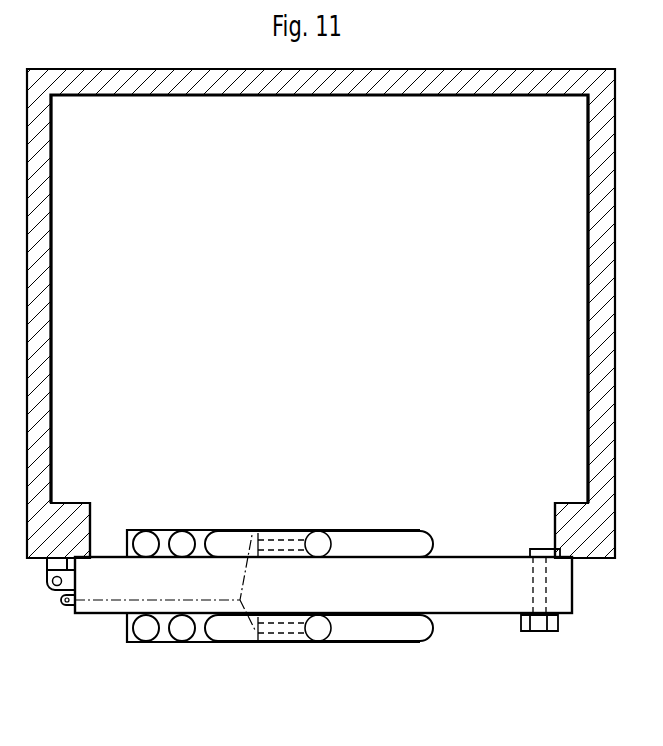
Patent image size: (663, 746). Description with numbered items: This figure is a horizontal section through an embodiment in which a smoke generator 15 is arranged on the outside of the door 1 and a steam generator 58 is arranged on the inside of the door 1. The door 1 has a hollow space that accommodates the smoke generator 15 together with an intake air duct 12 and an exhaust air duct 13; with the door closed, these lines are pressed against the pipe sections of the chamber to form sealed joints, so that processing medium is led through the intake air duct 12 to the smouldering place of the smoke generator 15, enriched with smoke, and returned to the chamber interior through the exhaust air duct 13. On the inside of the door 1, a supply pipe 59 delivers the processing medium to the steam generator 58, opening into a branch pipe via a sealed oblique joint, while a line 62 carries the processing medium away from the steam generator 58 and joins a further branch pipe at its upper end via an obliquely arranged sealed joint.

The door 1 is at (103, 606).
The intake air duct 12 is at (143, 636).
The exhaust air duct 13 is at (183, 637).
The smoke generator 15 is at (226, 633).
The steam generator 58 is at (345, 542).
The supply pipe 59 is at (144, 544).
The line carrying away the processing medium 62 is at (183, 545).